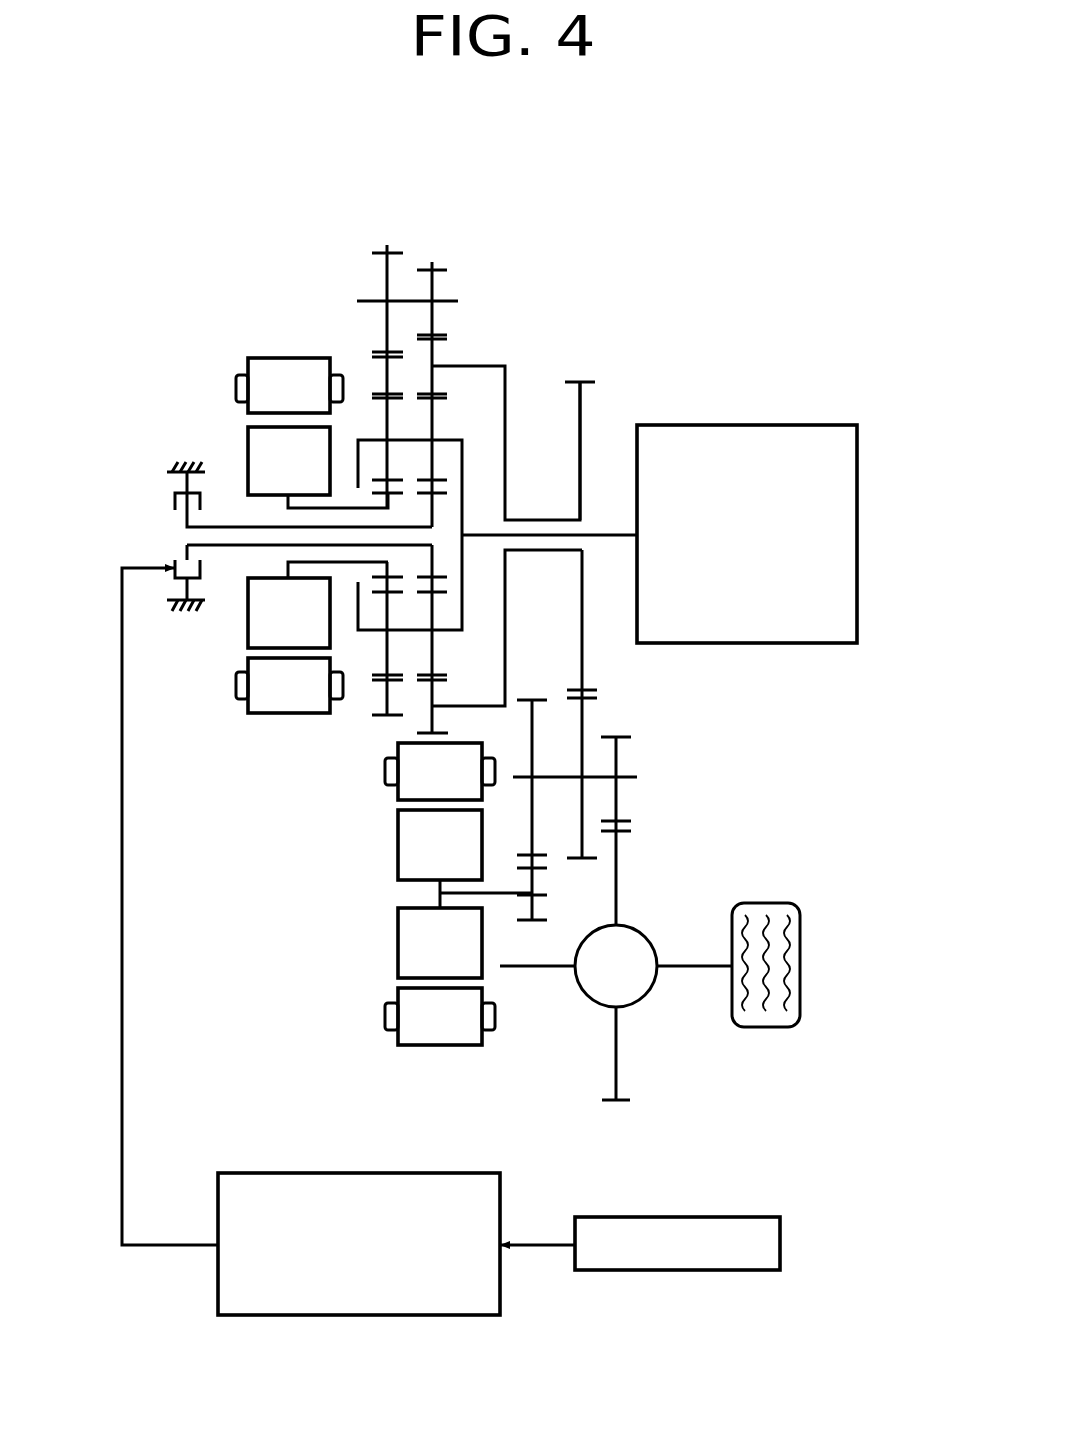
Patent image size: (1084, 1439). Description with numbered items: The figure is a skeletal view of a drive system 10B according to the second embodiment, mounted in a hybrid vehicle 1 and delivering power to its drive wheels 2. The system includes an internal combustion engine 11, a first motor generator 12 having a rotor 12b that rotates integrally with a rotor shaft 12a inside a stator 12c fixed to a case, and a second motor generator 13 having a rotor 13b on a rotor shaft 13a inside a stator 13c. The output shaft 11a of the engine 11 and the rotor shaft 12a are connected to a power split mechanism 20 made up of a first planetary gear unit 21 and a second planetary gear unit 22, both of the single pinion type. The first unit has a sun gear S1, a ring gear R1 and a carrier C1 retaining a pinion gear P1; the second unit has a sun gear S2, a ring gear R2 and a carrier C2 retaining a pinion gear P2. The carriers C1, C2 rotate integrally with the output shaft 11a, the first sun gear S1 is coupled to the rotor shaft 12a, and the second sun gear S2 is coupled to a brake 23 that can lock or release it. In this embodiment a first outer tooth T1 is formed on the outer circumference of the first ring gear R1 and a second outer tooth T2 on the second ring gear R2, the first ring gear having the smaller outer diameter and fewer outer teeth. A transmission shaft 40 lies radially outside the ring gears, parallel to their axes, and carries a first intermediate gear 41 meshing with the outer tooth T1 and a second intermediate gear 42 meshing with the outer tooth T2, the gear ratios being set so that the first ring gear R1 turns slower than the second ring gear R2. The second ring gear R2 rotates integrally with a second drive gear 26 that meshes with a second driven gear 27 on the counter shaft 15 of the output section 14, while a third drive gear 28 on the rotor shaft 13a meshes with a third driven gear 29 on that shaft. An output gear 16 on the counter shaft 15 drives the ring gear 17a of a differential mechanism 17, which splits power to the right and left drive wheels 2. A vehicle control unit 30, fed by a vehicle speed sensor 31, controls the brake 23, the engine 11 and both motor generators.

The hybrid vehicle 1 is at (765, 190).
The drive wheels 2 is at (765, 1027).
The drive system 10B is at (516, 184).
The internal combustion engine 11 is at (810, 423).
The output shaft 11a is at (607, 535).
The first motor generator 12 is at (235, 278).
The rotor shaft 12a is at (347, 507).
The rotor 12b is at (248, 628).
The stator 12c is at (262, 357).
The second motor generator 13 is at (463, 1068).
The rotor shaft 13a is at (499, 988).
The rotor 13b is at (398, 943).
The stator 13c is at (412, 1047).
The output section 14 is at (735, 779).
The counter shaft 15 is at (638, 776).
The output gear 16 is at (618, 800).
The differential mechanism 17 is at (647, 997).
The ring gear 17a is at (618, 874).
The power split mechanism 20 is at (414, 168).
The first planetary gear unit 21 is at (371, 750).
The second planetary gear unit 22 is at (488, 415).
The brake 23 is at (175, 397).
The second drive gear 26 is at (585, 378).
The second driven gear 27 is at (585, 718).
The third drive gear 28 is at (540, 905).
The third driven gear 29 is at (527, 695).
The vehicle control unit 30 is at (275, 1172).
The vehicle speed sensor 31 is at (676, 1215).
The transmission shaft 40 is at (447, 300).
The first intermediate gear 41 is at (381, 252).
The second intermediate gear 42 is at (437, 268).
The first outer tooth T1 is at (380, 350).
The second outer tooth T2 is at (440, 333).
The first ring gear R1 is at (383, 375).
The second ring gear R2 is at (432, 355).
The pinion gear P1 is at (390, 404).
The pinion gear P2 is at (437, 417).
The first sun gear S1 is at (393, 492).
The second sun gear S2 is at (435, 510).
The first carrier C1 is at (372, 635).
The second carrier C2 is at (447, 635).